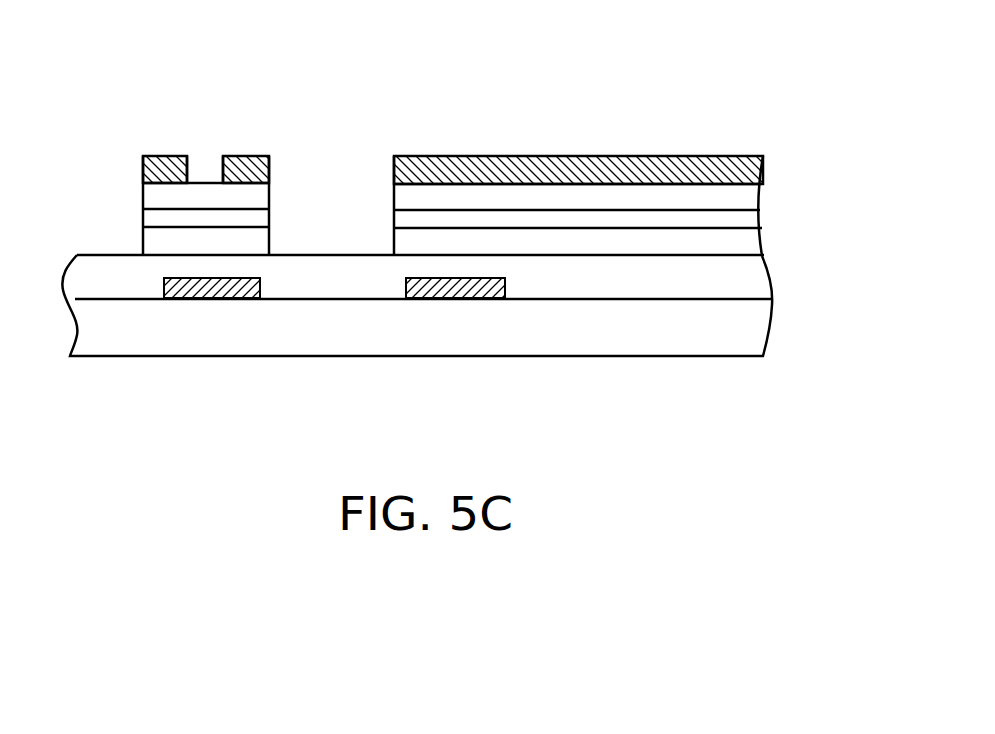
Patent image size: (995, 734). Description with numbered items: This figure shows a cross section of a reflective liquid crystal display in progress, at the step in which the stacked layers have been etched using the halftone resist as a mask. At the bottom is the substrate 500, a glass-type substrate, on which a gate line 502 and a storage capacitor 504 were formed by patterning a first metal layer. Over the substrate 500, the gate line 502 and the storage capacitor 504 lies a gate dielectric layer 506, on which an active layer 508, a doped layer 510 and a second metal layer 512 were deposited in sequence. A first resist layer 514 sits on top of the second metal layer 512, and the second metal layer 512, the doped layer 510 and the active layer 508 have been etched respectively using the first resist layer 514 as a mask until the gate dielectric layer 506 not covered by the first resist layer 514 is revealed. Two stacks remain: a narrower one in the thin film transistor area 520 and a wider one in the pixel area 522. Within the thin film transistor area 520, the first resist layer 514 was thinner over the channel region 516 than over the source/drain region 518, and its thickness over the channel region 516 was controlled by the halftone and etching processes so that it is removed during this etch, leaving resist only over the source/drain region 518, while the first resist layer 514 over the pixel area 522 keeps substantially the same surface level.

The substrate 500 is at (740, 328).
The gate line 502 is at (212, 292).
The storage capacitor 504 is at (460, 292).
The gate dielectric layer 506 is at (740, 273).
The active layer 508 is at (158, 245).
The doped layer 510 is at (158, 220).
The second metal layer 512 is at (158, 194).
The first resist layer 514 is at (158, 166).
The channel region 516 is at (223, 133).
The source/drain region 518 is at (268, 133).
The thin film transistor area 520 is at (287, 48).
The pixel area 522 is at (394, 119).